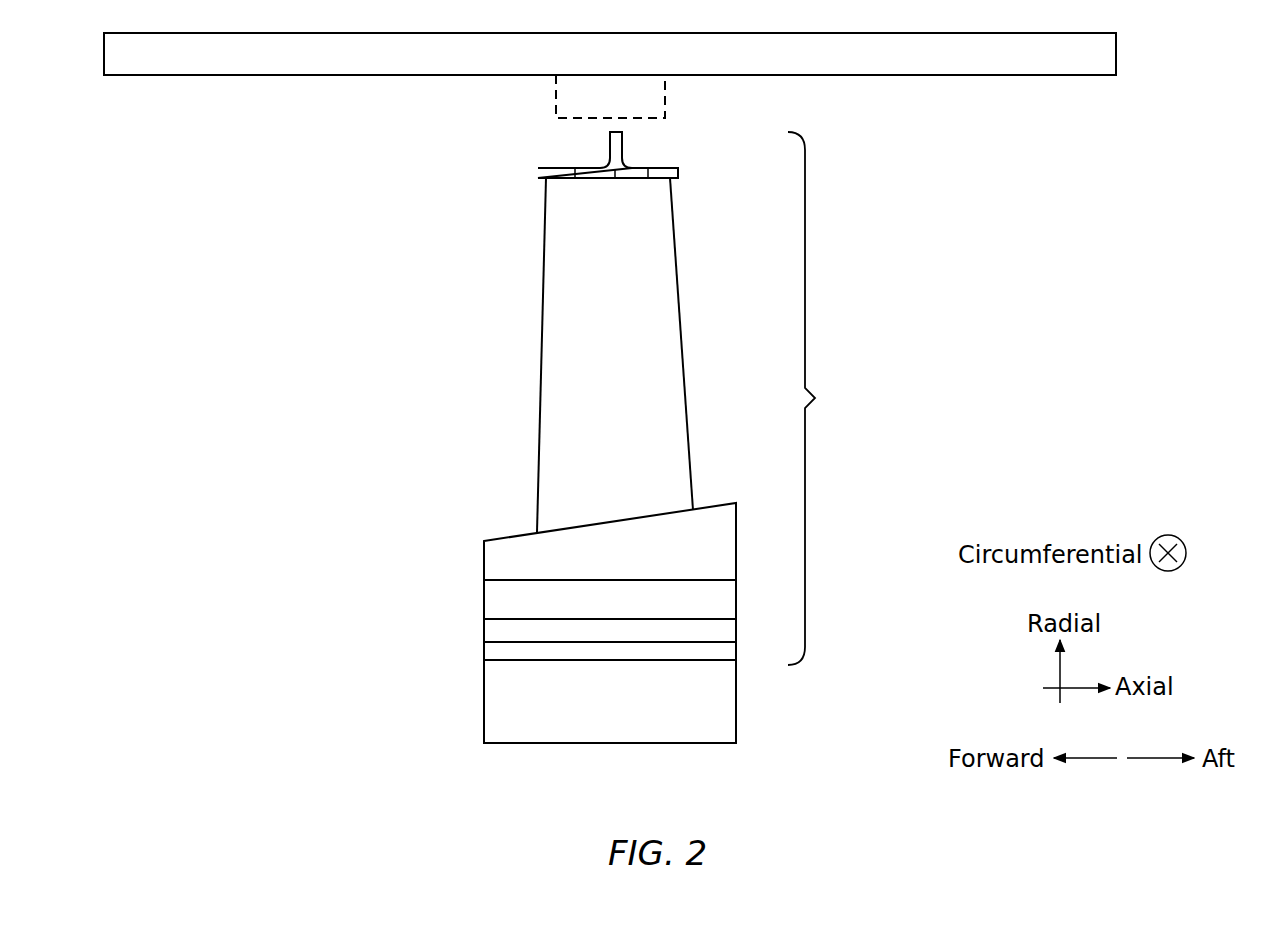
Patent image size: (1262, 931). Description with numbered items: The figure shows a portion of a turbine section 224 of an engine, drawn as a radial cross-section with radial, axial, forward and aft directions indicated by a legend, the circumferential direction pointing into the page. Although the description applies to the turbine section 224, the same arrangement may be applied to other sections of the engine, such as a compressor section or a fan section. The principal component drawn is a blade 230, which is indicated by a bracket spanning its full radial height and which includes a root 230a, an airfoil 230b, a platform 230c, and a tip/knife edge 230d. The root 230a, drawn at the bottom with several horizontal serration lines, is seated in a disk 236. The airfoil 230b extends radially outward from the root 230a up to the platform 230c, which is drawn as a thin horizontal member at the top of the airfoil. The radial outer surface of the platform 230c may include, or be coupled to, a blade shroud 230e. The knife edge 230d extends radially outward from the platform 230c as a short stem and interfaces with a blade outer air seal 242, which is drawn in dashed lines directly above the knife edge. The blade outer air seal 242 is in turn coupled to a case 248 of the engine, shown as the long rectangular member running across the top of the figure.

The turbine section 224 is at (978, 243).
The blade 230 is at (627, 398).
The root 230a is at (527, 610).
The airfoil 230b is at (572, 367).
The platform 230c is at (543, 173).
The tip/knife edge 230d is at (612, 145).
The blade shroud 230e is at (615, 178).
The disk 236 is at (632, 723).
The blade outer air seal (BOAS) 242 is at (632, 107).
The case 248 is at (632, 65).